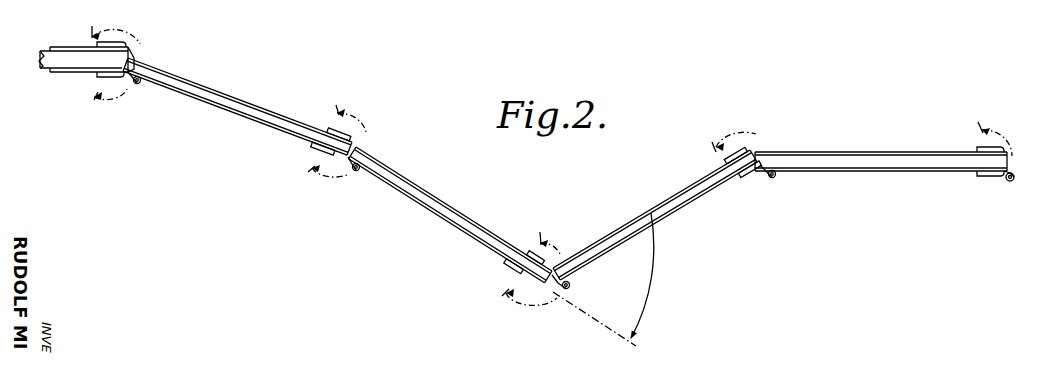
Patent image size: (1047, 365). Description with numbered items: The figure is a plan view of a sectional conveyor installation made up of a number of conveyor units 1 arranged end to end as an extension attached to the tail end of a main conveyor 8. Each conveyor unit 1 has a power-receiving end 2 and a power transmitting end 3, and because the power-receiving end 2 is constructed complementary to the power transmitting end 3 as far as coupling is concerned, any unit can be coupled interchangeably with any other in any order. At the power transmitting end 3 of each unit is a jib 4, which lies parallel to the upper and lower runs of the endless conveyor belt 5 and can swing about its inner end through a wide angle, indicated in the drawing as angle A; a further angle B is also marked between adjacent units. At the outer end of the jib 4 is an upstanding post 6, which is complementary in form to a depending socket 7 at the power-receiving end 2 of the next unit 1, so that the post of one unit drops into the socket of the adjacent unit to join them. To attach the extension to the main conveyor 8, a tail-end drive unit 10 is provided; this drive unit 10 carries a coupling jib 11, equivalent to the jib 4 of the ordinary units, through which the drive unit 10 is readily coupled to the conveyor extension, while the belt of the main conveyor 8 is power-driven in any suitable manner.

The conveyor unit 1 is at (259, 113).
The power-receiving end 2 is at (772, 150).
The power transmitting end 3 is at (972, 141).
The jib 4 is at (750, 194).
The endless conveyor belt 5 is at (690, 198).
The upstanding post 6 is at (1010, 182).
The depending socket 7 is at (139, 85).
The main conveyor 8 is at (80, 60).
The tail-end drive unit 10 is at (104, 46).
The coupling jib 11 is at (127, 86).
The swing angle A is at (558, 165).
The angle B is at (610, 279).